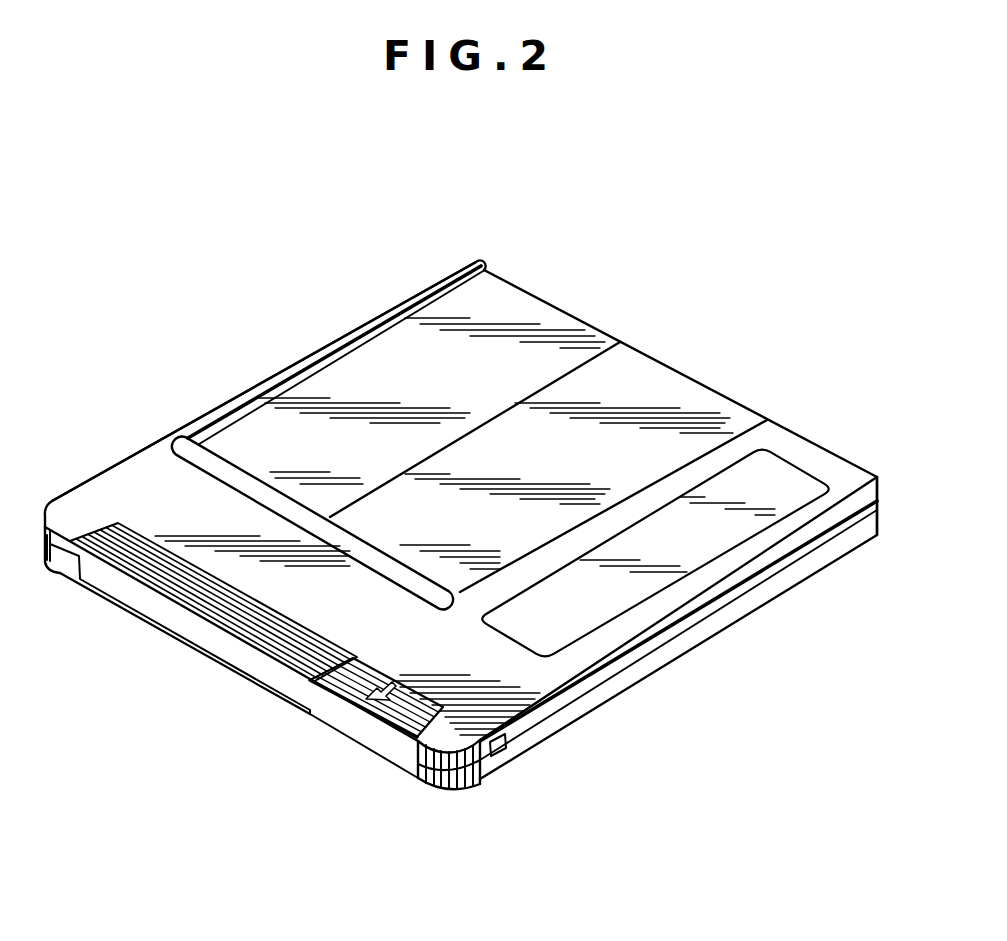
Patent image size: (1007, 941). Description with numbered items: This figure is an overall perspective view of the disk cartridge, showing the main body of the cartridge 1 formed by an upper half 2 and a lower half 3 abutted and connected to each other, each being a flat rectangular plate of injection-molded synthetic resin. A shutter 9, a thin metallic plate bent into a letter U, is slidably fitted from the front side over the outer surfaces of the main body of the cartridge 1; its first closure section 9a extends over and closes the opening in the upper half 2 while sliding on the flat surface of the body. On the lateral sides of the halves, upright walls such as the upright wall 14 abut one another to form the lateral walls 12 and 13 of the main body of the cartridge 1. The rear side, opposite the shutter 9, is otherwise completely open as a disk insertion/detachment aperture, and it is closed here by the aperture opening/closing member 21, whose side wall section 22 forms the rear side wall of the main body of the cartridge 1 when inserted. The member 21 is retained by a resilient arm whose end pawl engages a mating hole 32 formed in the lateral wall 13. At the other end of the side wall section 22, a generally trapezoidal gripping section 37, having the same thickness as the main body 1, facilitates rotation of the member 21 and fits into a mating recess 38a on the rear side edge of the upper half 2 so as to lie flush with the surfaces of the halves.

The main body of the cartridge 1 is at (222, 305).
The upper half 2 is at (838, 477).
The lower half 3 is at (833, 553).
The shutter 9 is at (641, 372).
The first closure section 9a is at (725, 420).
The lateral wall 12 is at (667, 647).
The lateral wall 13 is at (120, 463).
The upright wall 14 is at (882, 512).
The aperture opening/closing member 21 is at (168, 617).
The side wall section 22 is at (235, 657).
The mating hole 32 is at (502, 750).
The gripping section 37 is at (387, 717).
The mating recess 38a is at (360, 667).